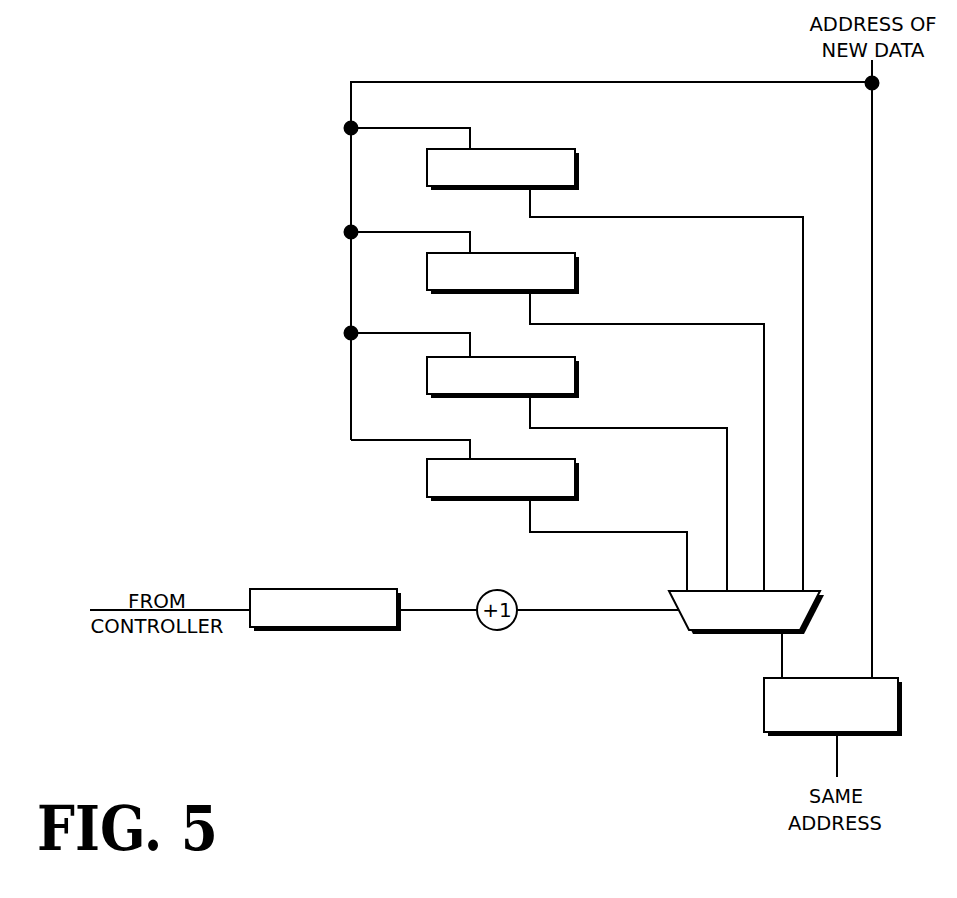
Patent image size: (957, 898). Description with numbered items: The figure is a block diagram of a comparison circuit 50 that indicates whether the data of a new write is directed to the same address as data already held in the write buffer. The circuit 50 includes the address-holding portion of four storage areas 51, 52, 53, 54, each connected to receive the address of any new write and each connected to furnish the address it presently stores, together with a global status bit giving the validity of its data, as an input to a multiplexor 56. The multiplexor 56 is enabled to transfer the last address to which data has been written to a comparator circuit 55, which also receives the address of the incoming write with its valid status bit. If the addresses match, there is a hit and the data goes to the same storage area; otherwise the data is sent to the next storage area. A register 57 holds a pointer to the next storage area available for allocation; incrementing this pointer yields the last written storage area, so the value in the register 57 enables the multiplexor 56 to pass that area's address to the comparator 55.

The comparison circuit 50 is at (612, 369).
The storage area 51 is at (615, 370).
The storage area 52 is at (595, 422).
The storage area 53 is at (577, 474).
The storage area 54 is at (557, 525).
The comparator circuit 55 is at (833, 727).
The multiplexor 56 is at (746, 634).
The register 57 is at (245, 610).